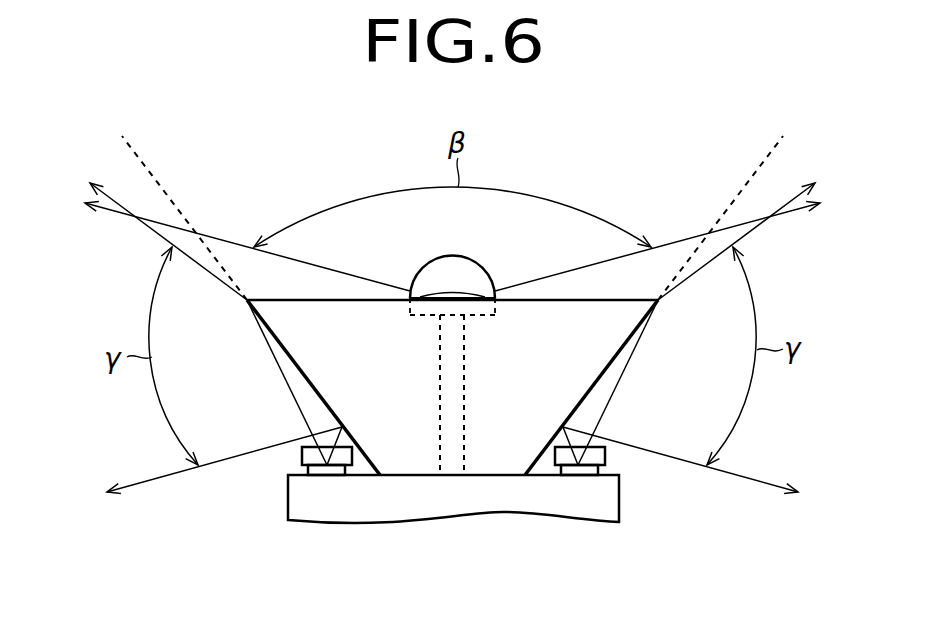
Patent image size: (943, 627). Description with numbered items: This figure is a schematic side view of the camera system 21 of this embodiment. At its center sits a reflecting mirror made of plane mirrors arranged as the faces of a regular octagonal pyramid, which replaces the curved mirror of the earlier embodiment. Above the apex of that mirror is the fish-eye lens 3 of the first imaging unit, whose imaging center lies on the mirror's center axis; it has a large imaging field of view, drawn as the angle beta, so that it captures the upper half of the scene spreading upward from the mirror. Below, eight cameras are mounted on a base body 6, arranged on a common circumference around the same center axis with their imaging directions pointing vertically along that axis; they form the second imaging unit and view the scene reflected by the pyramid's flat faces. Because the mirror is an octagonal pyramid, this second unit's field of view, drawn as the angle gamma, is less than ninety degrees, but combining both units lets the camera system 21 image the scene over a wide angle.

The fish-eye lens 3 is at (443, 277).
The base body 6 is at (623, 490).
The camera system 21 is at (482, 581).